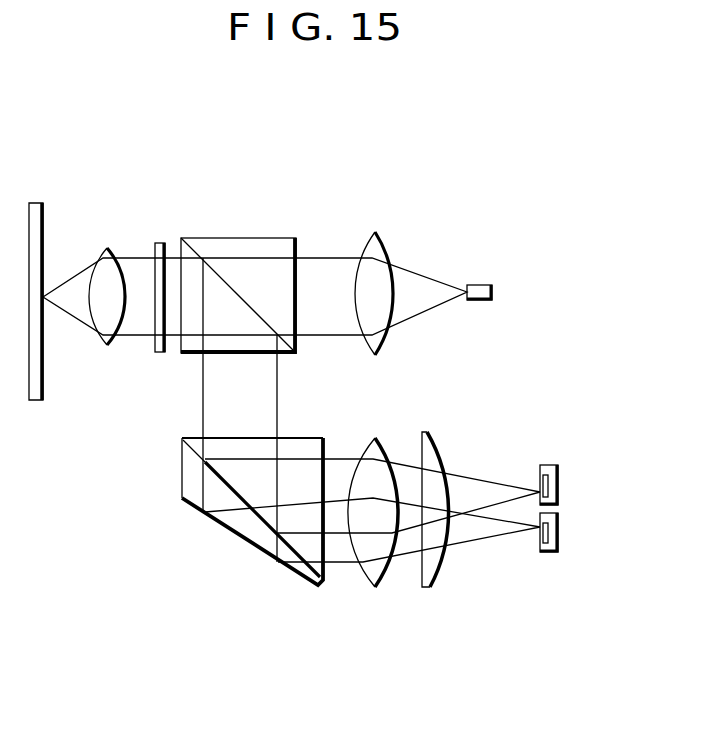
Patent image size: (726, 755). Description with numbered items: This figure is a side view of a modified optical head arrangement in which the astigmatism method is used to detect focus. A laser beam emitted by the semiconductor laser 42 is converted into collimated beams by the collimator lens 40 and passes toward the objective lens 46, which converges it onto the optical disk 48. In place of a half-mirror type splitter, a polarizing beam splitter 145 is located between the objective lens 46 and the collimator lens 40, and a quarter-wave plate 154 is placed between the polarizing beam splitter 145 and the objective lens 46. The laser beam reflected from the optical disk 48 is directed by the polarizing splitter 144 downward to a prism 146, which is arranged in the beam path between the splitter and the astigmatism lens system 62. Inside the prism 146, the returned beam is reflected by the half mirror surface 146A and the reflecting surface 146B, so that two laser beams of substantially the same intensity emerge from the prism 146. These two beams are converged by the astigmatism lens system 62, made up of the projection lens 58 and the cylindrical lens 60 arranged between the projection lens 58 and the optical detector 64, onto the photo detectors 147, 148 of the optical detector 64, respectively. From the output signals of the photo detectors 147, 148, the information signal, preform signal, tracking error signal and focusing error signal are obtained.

The collimator lens 40 is at (385, 245).
The semiconductor laser 42 is at (480, 285).
The objective lens 46 is at (110, 248).
The optical disk 48 is at (47, 206).
The projection lens 58 is at (382, 441).
The cylindrical lens 60 is at (436, 447).
The astigmatism lens system 62 is at (398, 595).
The optical detector 64 is at (583, 467).
The polarizing beam splitter 144 is at (260, 268).
The polarizing beam splitter 145 is at (252, 308).
The prism 146 is at (218, 487).
The half mirror surface 146A is at (182, 463).
The reflecting surface 146B is at (245, 542).
The photo detector 147 is at (558, 473).
The photo detector 148 is at (558, 527).
The λ/4 plate 154 is at (159, 352).